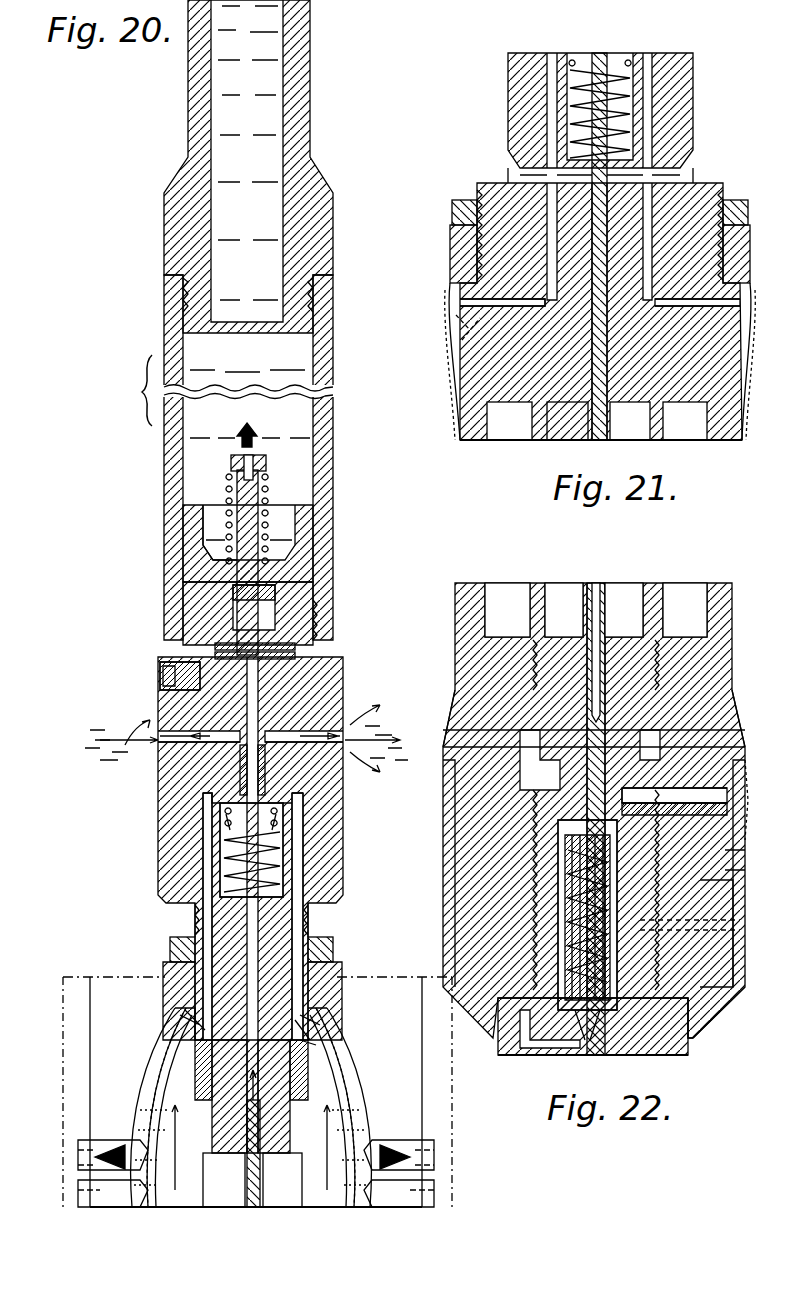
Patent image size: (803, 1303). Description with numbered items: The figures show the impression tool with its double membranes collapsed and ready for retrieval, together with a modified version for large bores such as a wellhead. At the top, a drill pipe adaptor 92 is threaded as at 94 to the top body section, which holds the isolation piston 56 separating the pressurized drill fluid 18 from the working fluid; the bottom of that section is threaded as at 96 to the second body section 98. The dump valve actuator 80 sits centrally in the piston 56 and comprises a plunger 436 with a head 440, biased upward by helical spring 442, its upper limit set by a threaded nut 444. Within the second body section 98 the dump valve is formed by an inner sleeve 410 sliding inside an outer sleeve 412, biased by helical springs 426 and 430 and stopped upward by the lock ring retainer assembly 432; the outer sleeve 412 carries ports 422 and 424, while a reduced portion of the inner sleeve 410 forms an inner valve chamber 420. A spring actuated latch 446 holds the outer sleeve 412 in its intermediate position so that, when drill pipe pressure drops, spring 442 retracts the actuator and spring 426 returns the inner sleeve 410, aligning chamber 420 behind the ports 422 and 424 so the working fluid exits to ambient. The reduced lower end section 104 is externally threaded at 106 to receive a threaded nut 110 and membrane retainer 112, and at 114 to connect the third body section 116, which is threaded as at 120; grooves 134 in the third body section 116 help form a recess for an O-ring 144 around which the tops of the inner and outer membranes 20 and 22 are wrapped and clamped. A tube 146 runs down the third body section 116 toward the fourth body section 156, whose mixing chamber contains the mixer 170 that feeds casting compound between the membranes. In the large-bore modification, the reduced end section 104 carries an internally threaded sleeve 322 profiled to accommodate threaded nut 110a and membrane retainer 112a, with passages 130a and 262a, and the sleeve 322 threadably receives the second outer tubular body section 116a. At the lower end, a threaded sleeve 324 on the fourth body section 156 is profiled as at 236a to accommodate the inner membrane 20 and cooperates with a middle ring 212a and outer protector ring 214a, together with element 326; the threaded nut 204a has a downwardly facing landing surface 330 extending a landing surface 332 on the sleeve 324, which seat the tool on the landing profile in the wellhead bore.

In FIG. 20, the fluid under pressure 18 is at (290, 76).
In FIG. 20, the drill pipe adaptor 92 is at (323, 170).
In FIG. 20, the threaded connection 94 is at (172, 291).
In FIG. 20, the head 440 is at (240, 470).
In FIG. 20, the plunger 436 is at (232, 500).
In FIG. 20, the helical spring 442 is at (226, 526).
In FIG. 20, the isolation piston 56 is at (203, 562).
In FIG. 20, the threaded nut 444 is at (233, 598).
In FIG. 20, the spring actuated latch 446 is at (157, 651).
In FIG. 20, the dump valve actuator 80 is at (280, 506).
In FIG. 20, the second body section 98 is at (306, 612).
In FIG. 21, the second body section 98 is at (510, 96).
In FIG. 20, the threaded connection 96 is at (330, 632).
In FIG. 20, the lock ring retainer assembly 432 is at (296, 648).
In FIG. 20, the inner sleeve 410 is at (296, 658).
In FIG. 20, the outer sleeve 412 is at (200, 762).
In FIG. 20, the port 422 is at (300, 762).
In FIG. 20, the port 424 is at (285, 796).
In FIG. 20, the inner valve chamber 420 is at (216, 832).
In FIG. 20, the helical spring 430 is at (226, 882).
In FIG. 20, the helical spring 426 is at (283, 870).
In FIG. 20, the reduced lower end section 104 is at (194, 926).
In FIG. 21, the reduced lower end section 104 is at (545, 176).
In FIG. 20, the external threads 106 is at (172, 946).
In FIG. 20, the threaded nut 110 is at (326, 946).
In FIG. 20, the membrane retainer 112 is at (336, 972).
In FIG. 20, the O-ring 144 is at (326, 1012).
In FIG. 20, the inward grooves 134 is at (320, 1032).
In FIG. 20, the threaded connection 120 is at (160, 1080).
In FIG. 20, the inner membrane 20 is at (150, 1108).
In FIG. 21, the inner membrane 20 is at (742, 396).
In FIG. 20, the external threads 114 is at (336, 1090).
In FIG. 20, the outer membrane 22 is at (356, 1106).
In FIG. 21, the outer membrane 22 is at (746, 364).
In FIG. 22, the outer membrane 22 is at (746, 792).
In FIG. 20, the tube 146 is at (245, 1170).
In FIG. 21, the tube 146 is at (605, 440).
In FIG. 22, the tube 146 is at (595, 583).
In FIG. 20, the third body section 116 is at (302, 1170).
In FIG. 21, the third body section 116 is at (535, 441).
In FIG. 22, the third body section 116 is at (655, 583).
In FIG. 21, the threaded nut 110a is at (456, 204).
In FIG. 21, the membrane retainer 112a is at (455, 242).
In FIG. 21, the passage 130a is at (470, 302).
In FIG. 21, the passage 262a is at (470, 340).
In FIG. 21, the internally threaded sleeve 322 is at (700, 196).
In FIG. 21, the second outer tubular body section 116a is at (712, 441).
In FIG. 22, the second outer tubular body section 116a is at (712, 583).
In FIG. 22, the threaded sleeve 324 is at (720, 712).
In FIG. 22, the profile 236a is at (743, 752).
In FIG. 22, the middle ring 212a is at (740, 836).
In FIG. 22, the outer protector ring 214a is at (738, 862).
In FIG. 22, the sleeve 326 is at (735, 906).
In FIG. 22, the threaded nut 204a is at (736, 982).
In FIG. 22, the landing surface 330 is at (735, 1000).
In FIG. 22, the landing surface 332 is at (710, 1022).
In FIG. 22, the fourth body section 156 is at (690, 1052).
In FIG. 22, the mixer 170 is at (560, 1056).